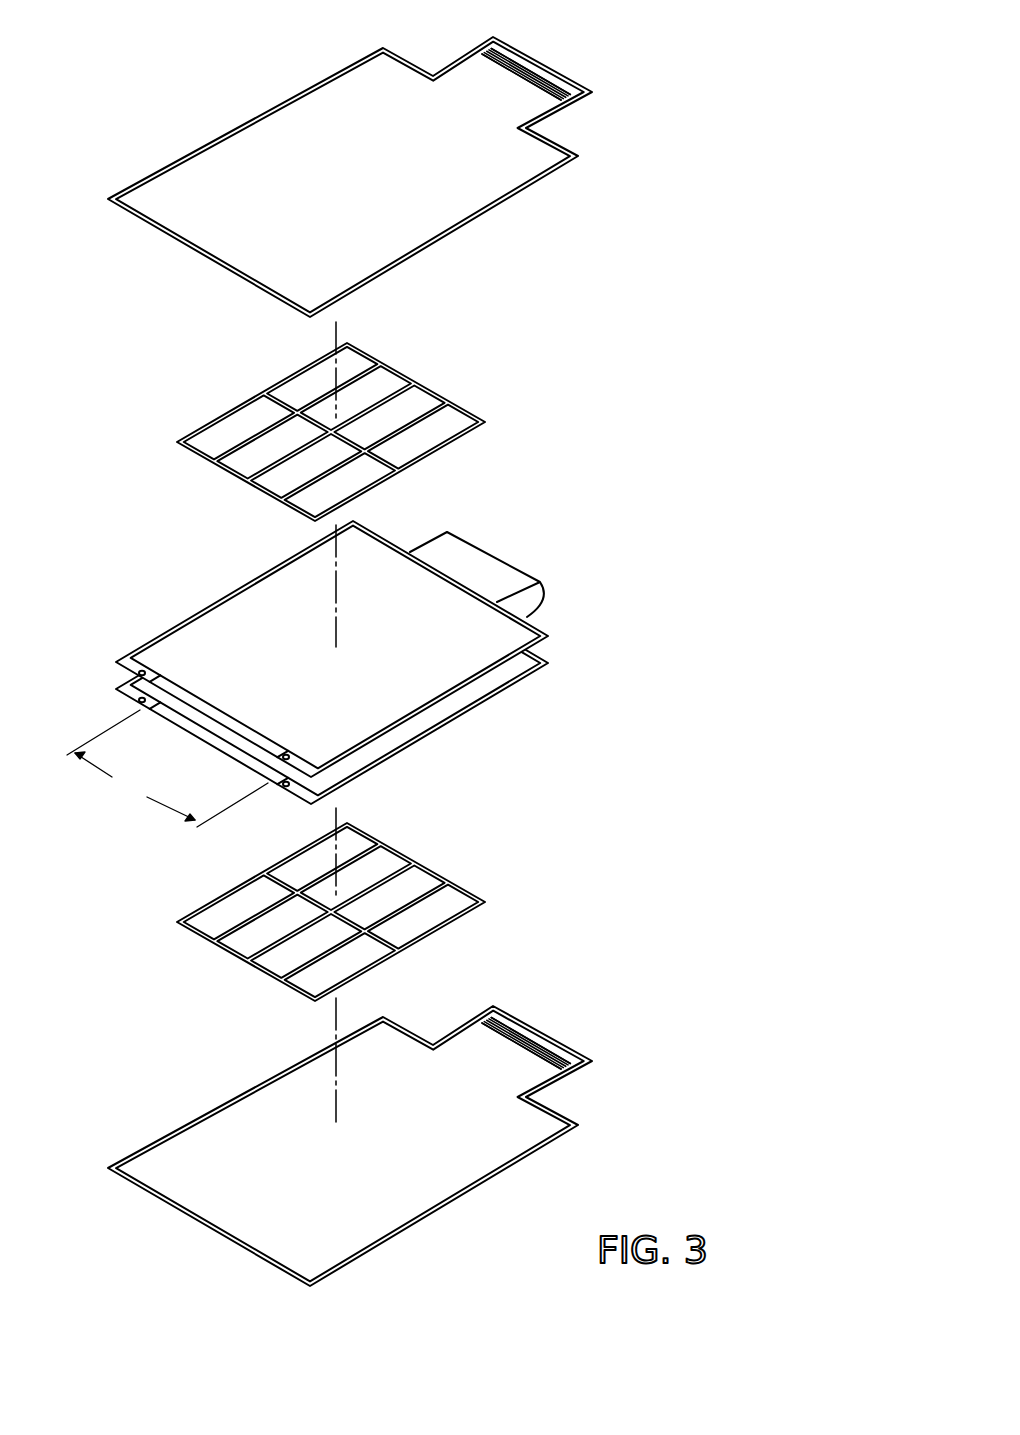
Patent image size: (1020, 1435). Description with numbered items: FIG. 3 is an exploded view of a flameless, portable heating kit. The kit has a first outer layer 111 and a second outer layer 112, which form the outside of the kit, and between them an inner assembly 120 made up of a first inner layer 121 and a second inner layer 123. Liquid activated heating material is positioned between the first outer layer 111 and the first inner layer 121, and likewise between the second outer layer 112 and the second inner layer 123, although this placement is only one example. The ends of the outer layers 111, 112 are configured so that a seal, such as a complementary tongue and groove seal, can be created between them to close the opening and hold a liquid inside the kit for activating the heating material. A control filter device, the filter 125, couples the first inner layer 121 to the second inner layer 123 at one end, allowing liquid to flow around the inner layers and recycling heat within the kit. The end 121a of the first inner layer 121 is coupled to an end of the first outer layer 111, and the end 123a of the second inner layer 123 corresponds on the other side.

The first outer layer 111 is at (240, 147).
The second outer layer 112 is at (240, 1116).
The heat generating assembly 120 is at (370, 680).
The first inner layer 121 is at (547, 637).
The end of first inner layer 121a is at (142, 671).
The second inner layer 123 is at (548, 662).
The end of second inner layer 123a is at (142, 700).
The filter 125 is at (541, 593).